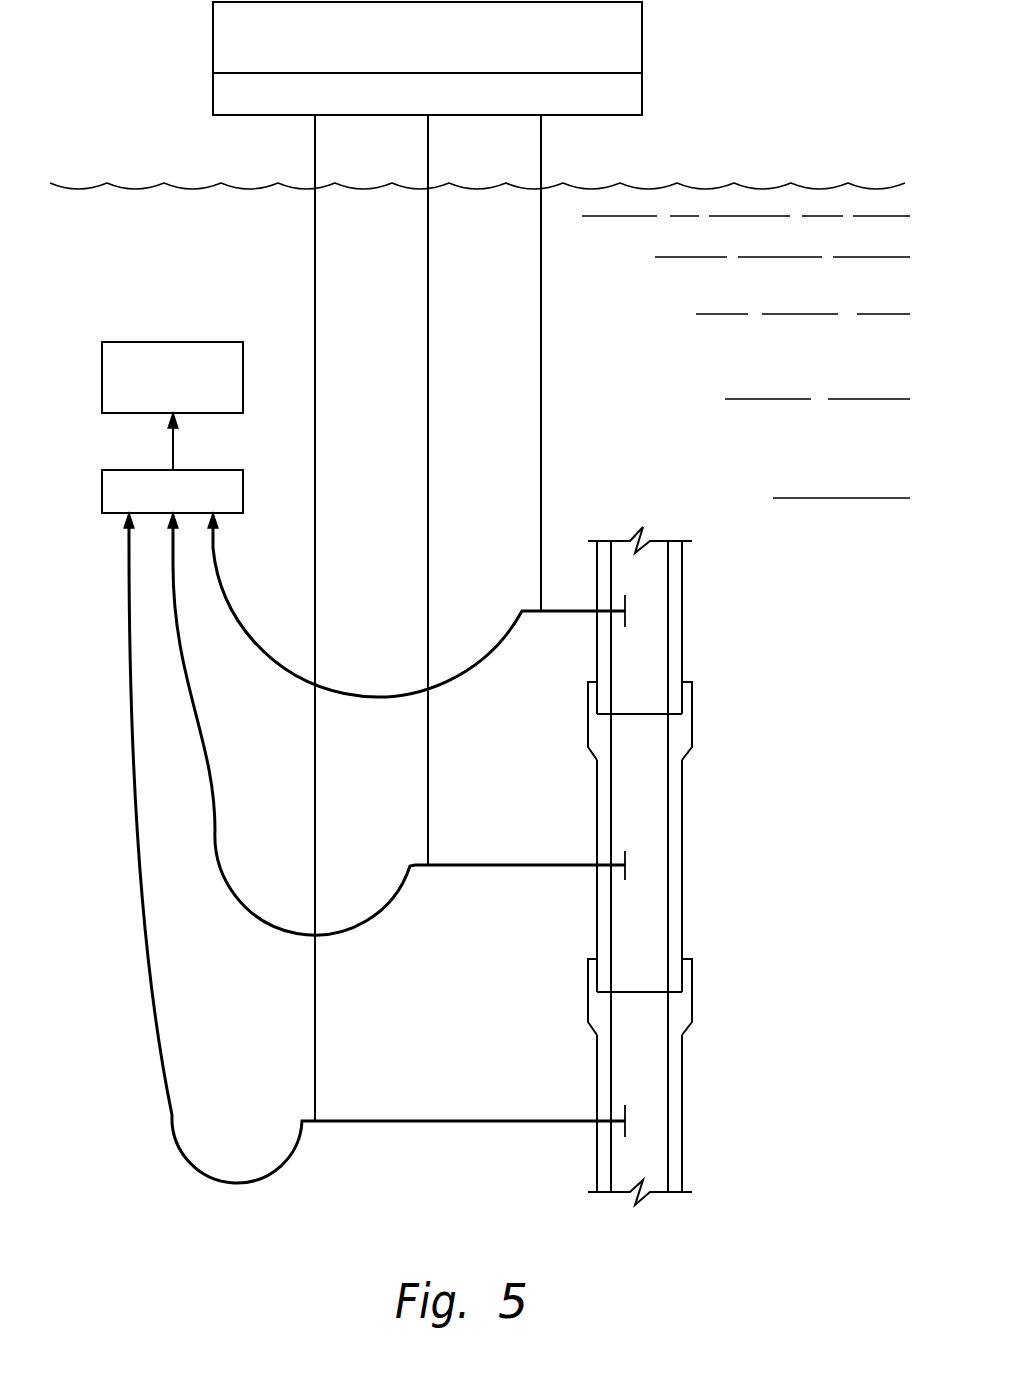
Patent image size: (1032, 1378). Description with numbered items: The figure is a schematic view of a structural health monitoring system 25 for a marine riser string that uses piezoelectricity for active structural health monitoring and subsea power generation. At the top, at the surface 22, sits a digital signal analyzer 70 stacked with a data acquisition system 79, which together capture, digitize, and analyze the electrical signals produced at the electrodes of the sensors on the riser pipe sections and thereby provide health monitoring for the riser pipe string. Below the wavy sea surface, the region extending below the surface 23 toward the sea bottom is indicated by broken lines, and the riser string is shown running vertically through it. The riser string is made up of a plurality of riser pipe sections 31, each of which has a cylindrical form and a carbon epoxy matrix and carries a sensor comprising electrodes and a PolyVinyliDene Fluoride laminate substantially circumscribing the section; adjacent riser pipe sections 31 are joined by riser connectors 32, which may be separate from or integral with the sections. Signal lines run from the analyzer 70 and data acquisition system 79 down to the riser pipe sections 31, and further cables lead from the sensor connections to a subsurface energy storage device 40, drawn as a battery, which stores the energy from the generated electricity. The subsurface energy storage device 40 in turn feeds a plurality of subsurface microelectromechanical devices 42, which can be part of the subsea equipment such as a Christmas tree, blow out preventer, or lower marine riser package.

The digital signal analyzer 70 is at (645, 16).
The data acquisition system 79 is at (645, 89).
The structural health monitoring system 25 is at (782, 74).
The surface 22 is at (808, 187).
The below the surface 23 is at (835, 363).
The subsurface microelectromechanical devices 42 is at (102, 371).
The subsurface energy storage device 40 is at (102, 487).
The riser pipe section 31 is at (683, 826).
The riser connector 32 is at (693, 698).